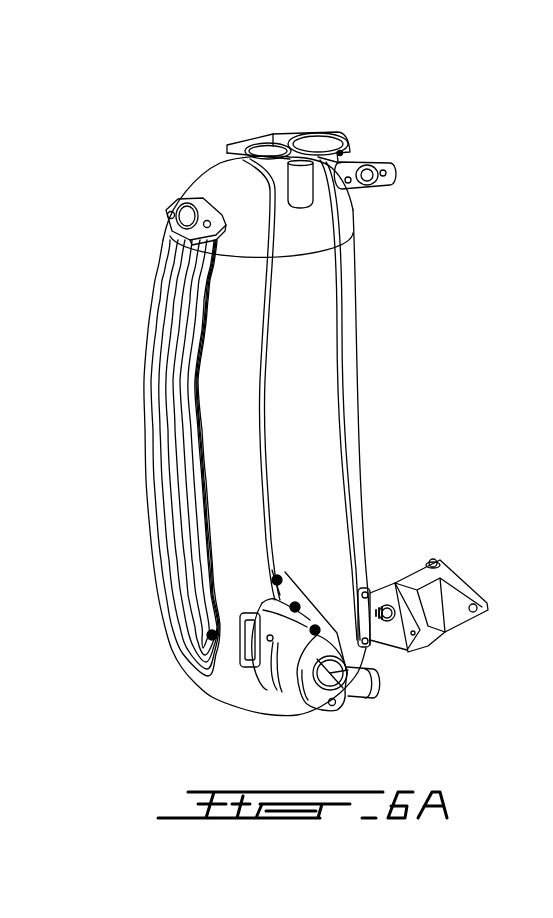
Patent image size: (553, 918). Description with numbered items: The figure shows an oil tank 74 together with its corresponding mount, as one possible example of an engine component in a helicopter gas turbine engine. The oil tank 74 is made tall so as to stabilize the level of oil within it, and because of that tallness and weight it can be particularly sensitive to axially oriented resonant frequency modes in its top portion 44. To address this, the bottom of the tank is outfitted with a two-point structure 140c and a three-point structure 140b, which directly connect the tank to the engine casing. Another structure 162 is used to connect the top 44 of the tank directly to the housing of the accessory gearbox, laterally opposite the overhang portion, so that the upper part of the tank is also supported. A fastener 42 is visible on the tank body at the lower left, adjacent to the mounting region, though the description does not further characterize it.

The oil tank 74 is at (391, 129).
The top portion 44 is at (205, 207).
The structure 162 is at (370, 177).
The fastener 42 is at (203, 636).
The 3-structure 140b is at (438, 564).
The 2-structure 140c is at (315, 630).